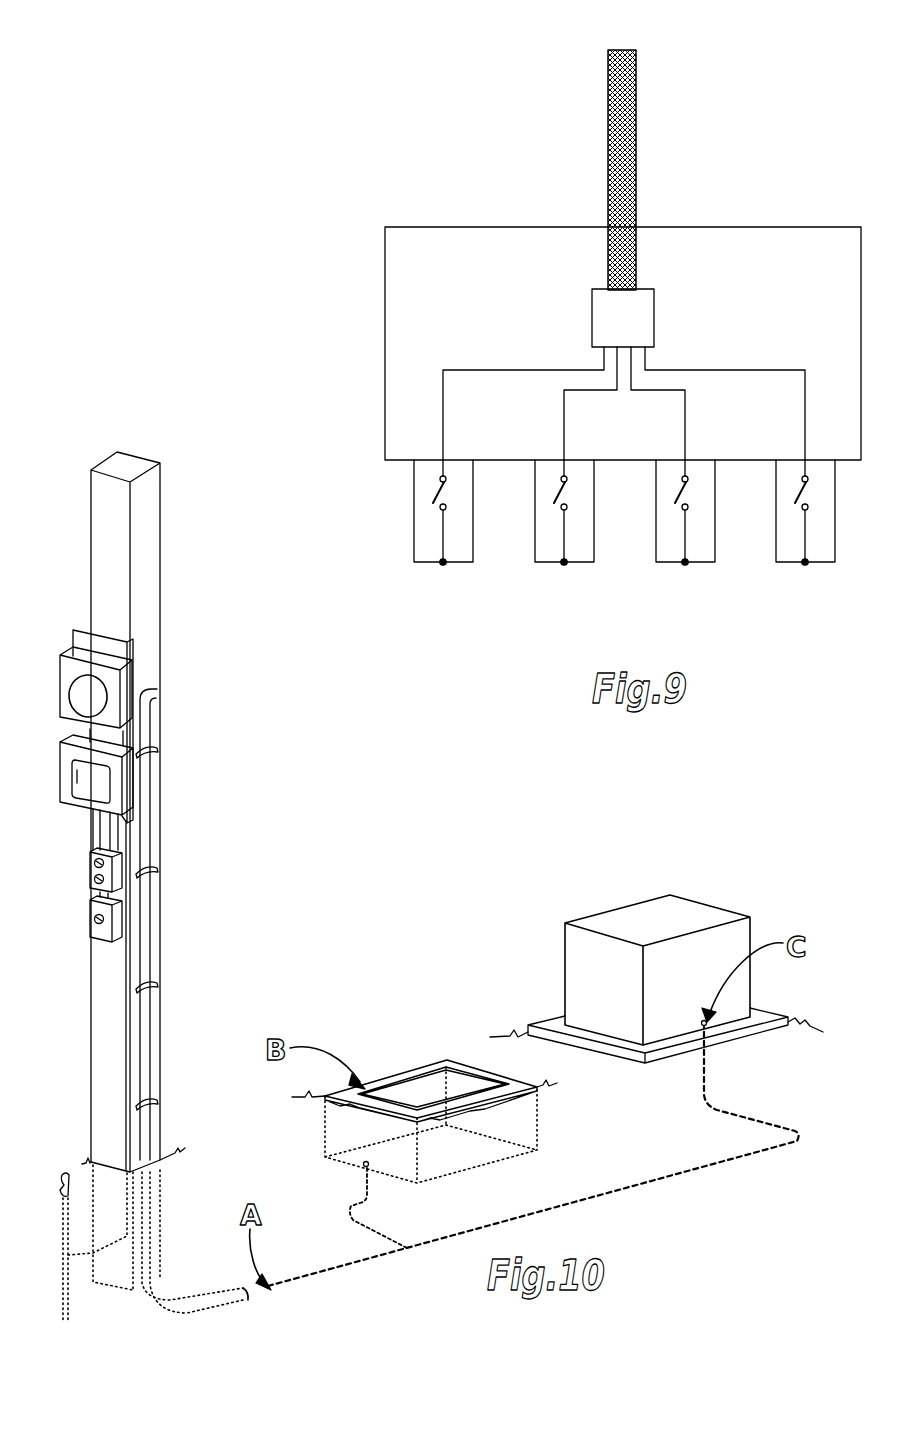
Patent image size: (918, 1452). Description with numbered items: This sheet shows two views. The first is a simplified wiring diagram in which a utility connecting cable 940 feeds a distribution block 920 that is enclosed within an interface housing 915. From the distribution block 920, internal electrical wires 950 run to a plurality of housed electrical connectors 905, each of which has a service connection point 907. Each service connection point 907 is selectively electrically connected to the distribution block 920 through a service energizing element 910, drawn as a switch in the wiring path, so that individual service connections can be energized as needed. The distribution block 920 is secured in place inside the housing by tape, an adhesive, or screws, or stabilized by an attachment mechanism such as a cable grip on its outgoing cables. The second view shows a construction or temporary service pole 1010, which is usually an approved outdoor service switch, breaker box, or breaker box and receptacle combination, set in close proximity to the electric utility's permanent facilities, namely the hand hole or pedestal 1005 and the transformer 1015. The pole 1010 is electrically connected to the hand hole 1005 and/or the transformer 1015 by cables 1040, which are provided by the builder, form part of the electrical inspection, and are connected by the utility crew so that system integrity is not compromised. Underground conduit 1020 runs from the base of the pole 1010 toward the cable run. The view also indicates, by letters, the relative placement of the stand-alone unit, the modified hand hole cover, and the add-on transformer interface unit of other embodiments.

In FIG. 9, the housed electrical connector 905 is at (460, 565).
In FIG. 9, the service connection point 907 is at (445, 567).
In FIG. 9, the service energizing element 910 is at (448, 493).
In FIG. 9, the interface housing 915 is at (798, 226).
In FIG. 9, the distribution block 920 is at (656, 325).
In FIG. 9, the utility connecting cable 940 is at (637, 127).
In FIG. 9, the internal electrical wires 950 is at (514, 367).
In FIG. 10, the hand hole 1005 is at (390, 1075).
In FIG. 10, the temporary service pole 1010 is at (153, 560).
In FIG. 10, the transformer 1015 is at (628, 905).
In FIG. 10, the underground conduit 1020 is at (208, 1308).
In FIG. 10, the cable 1040 is at (360, 1262).